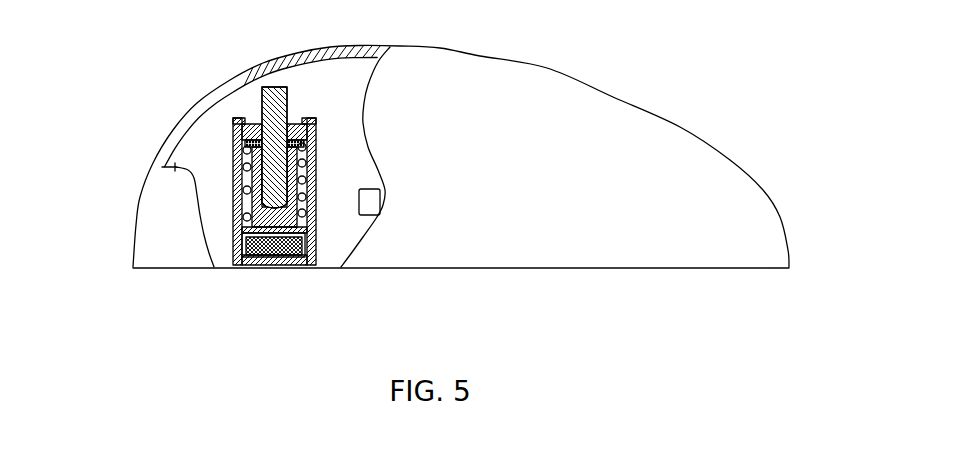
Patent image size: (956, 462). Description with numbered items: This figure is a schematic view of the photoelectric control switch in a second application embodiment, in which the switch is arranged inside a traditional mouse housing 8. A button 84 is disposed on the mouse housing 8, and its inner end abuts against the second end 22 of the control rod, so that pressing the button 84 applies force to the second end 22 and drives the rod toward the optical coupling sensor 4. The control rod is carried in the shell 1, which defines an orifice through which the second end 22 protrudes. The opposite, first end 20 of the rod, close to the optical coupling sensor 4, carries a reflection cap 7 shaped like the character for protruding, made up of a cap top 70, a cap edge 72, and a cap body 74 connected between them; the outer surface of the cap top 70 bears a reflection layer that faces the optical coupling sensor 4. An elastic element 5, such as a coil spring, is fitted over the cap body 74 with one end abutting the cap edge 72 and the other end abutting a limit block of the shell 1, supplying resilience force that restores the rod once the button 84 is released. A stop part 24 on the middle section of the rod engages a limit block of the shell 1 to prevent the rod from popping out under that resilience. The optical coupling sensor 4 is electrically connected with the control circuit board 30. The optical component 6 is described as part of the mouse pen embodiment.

The shell 1 is at (237, 208).
The optical coupling sensor 4 is at (285, 268).
The elastic element 5 is at (238, 152).
The optical component 6 is at (236, 232).
The reflection cap 7 is at (366, 161).
The mouse housing 8 is at (520, 87).
The first end 20 is at (236, 180).
The second end 22 is at (288, 100).
The stop part 24 is at (240, 128).
The control circuit board 30 is at (370, 200).
The cap top 70 is at (312, 207).
The cap edge 72 is at (312, 138).
The cap body 74 is at (312, 162).
The button 84 is at (258, 83).